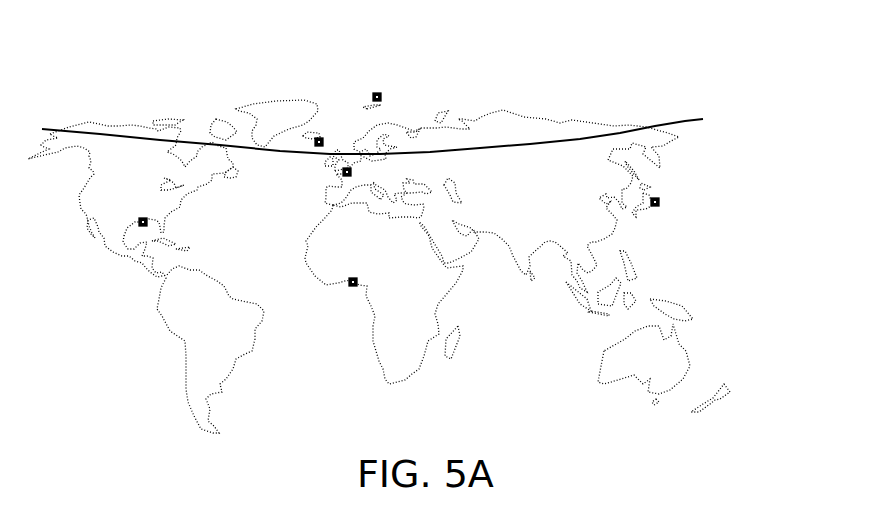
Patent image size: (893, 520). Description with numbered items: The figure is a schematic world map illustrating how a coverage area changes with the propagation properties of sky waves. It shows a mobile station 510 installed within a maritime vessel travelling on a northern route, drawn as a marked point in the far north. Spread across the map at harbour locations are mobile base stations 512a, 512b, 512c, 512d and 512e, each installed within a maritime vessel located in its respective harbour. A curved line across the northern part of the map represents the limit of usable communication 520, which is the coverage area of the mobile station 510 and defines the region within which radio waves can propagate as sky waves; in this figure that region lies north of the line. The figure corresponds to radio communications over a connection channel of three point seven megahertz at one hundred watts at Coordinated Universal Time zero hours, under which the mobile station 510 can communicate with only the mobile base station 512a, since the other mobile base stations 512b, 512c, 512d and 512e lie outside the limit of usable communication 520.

The mobile station 510 is at (418, 74).
The mobile base station 512a is at (318, 140).
The mobile base station 512b is at (305, 205).
The mobile base station 512c is at (123, 260).
The mobile base station 512d is at (336, 318).
The mobile base station 512e is at (695, 230).
The limit of usable communication 520 is at (372, 113).